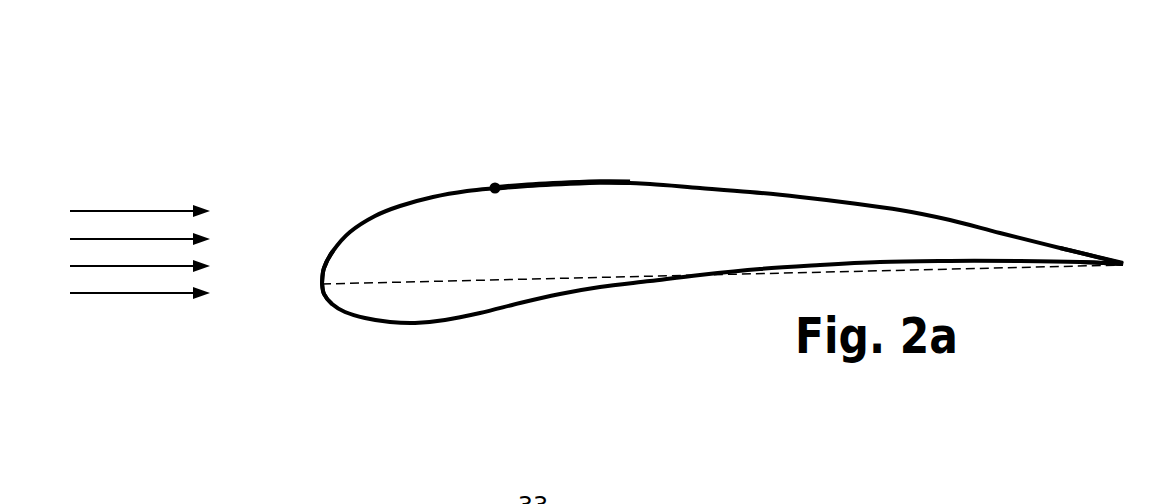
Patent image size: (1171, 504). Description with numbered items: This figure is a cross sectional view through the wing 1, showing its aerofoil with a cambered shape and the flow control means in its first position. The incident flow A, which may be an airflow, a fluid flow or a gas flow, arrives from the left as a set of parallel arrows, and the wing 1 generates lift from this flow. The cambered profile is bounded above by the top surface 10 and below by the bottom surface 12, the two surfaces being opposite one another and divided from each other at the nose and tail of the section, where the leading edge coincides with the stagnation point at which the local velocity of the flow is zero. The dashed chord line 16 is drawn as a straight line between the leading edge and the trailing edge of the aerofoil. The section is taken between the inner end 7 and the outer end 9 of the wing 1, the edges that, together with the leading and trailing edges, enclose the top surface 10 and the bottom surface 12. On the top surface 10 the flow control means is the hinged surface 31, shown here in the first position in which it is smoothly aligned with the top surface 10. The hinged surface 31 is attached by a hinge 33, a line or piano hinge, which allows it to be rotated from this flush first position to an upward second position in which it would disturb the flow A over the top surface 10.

The wing 1 is at (682, 242).
The inner end 7 is at (314, 294).
The outer end 9 is at (1123, 286).
The top surface 10 is at (403, 203).
The bottom surface 12 is at (484, 314).
The chord line 16 is at (543, 280).
The hinged surface 31 is at (588, 181).
The hinge 33 is at (496, 184).
The incident flow A is at (117, 192).